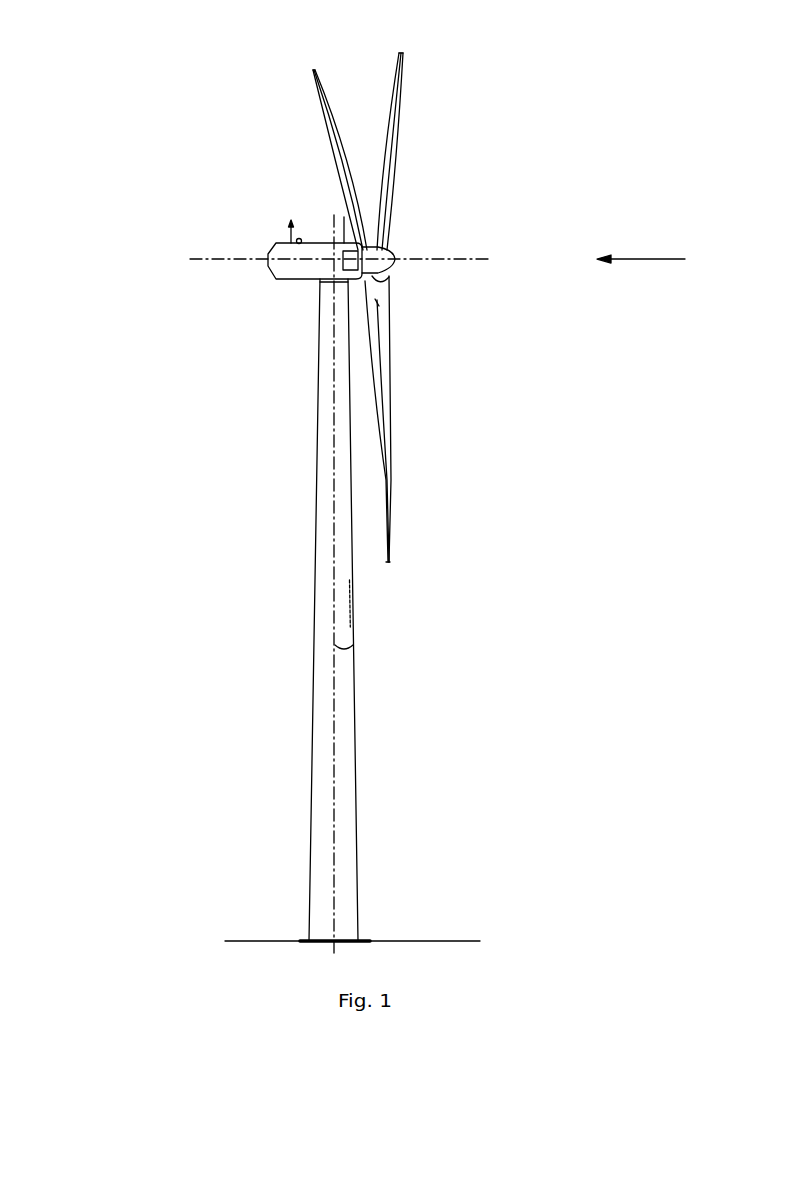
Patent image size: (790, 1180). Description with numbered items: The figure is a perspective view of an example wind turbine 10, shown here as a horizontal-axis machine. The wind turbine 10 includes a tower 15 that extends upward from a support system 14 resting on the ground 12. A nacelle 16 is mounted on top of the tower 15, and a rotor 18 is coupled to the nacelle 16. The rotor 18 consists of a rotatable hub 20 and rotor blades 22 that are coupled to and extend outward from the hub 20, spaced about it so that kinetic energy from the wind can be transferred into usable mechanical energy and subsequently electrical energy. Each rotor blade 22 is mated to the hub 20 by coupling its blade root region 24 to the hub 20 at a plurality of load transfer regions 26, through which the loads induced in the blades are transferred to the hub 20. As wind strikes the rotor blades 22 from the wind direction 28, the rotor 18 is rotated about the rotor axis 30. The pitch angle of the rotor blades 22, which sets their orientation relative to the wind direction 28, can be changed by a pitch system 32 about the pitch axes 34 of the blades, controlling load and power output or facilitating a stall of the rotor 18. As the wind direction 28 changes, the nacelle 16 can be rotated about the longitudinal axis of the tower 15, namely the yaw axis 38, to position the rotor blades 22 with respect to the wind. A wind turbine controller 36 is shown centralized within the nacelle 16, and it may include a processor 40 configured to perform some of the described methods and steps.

The wind turbine 10 is at (128, 78).
The ground 12 is at (245, 940).
The support system 14 is at (300, 939).
The tower 15 is at (328, 587).
The nacelle 16 is at (292, 280).
The rotor 18 is at (405, 176).
The rotatable hub 20 is at (393, 254).
The rotor blade 22 is at (327, 128).
The blade root region 24 is at (388, 350).
The load transfer regions 26 is at (385, 282).
The wind direction 28 is at (651, 258).
The rotor axis 30 is at (458, 263).
The pitch system 32 is at (378, 304).
The pitch axes 34 is at (312, 71).
The wind turbine controller 36 is at (336, 294).
The yaw axis 38 is at (362, 641).
The processor 40 is at (340, 212).